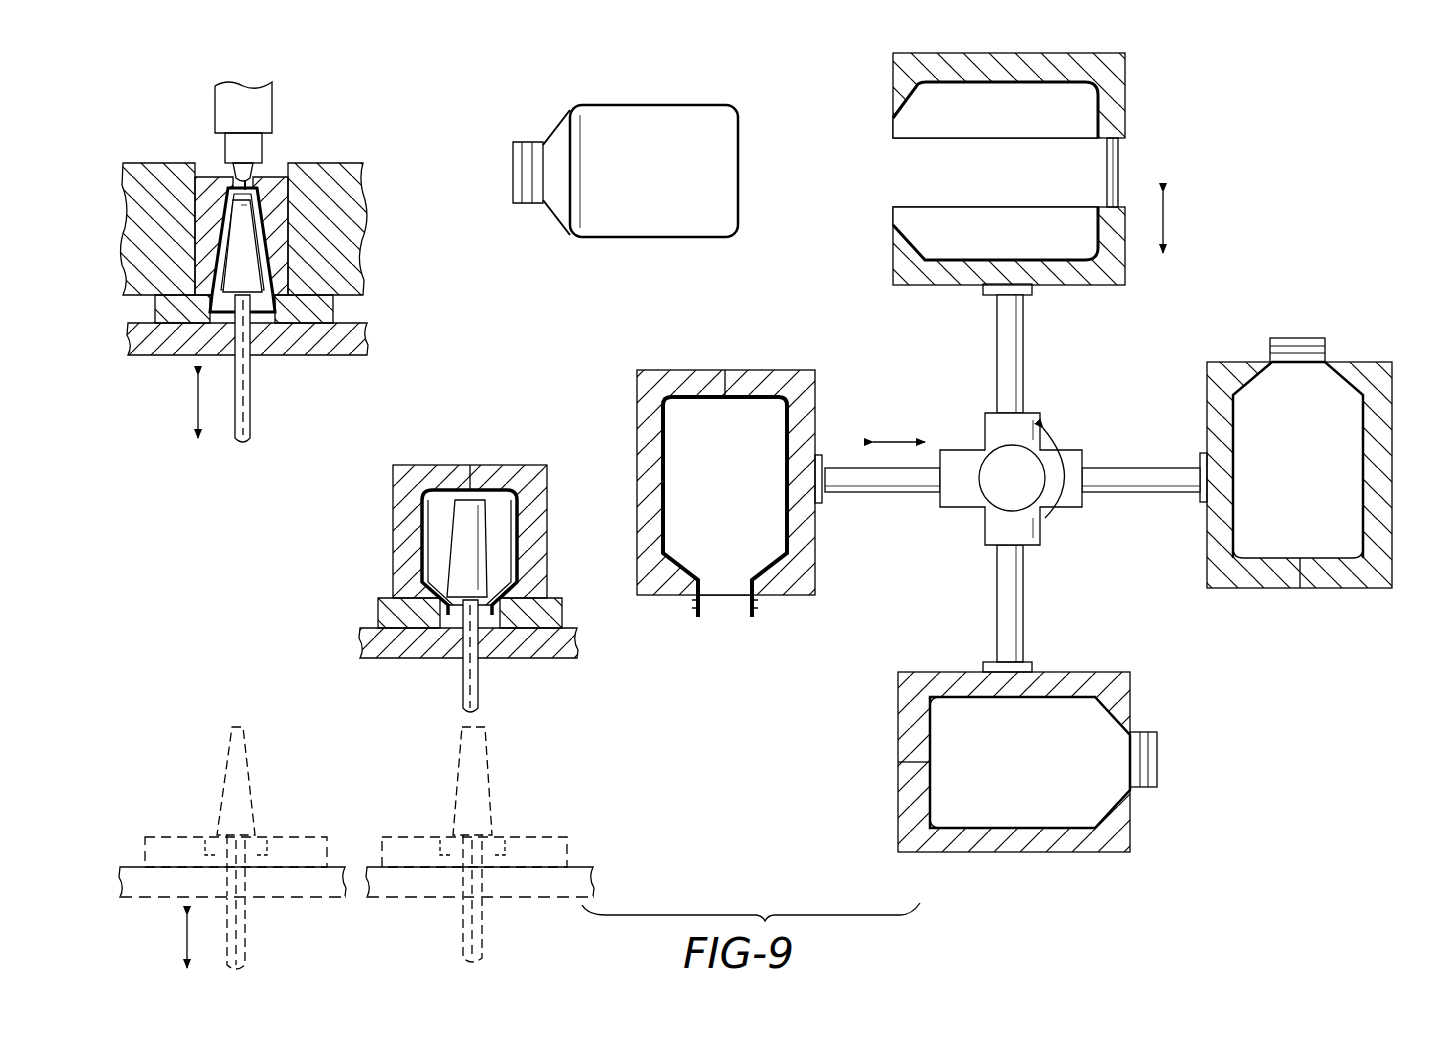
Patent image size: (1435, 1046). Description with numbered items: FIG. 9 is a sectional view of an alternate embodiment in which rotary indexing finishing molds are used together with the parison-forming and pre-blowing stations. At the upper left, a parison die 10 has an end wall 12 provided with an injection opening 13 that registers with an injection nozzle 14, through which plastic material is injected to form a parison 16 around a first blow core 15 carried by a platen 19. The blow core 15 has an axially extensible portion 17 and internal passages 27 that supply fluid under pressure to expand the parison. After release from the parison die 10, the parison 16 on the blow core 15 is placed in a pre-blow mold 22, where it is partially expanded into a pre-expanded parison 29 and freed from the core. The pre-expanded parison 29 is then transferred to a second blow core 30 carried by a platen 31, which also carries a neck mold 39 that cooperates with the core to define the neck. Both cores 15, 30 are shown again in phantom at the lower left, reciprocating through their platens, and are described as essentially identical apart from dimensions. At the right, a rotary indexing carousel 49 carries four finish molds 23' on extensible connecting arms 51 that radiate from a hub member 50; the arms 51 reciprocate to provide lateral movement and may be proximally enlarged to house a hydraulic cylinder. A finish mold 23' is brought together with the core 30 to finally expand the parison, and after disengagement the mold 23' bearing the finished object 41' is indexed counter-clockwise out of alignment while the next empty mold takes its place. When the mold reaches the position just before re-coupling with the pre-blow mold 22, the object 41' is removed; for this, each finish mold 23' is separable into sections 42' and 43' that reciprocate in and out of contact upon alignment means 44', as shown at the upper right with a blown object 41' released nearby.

The parison die 10 is at (190, 266).
The end wall 12 is at (258, 187).
The injection opening 13 is at (250, 182).
The injection nozzle 14 is at (264, 112).
The first blow core 15 is at (222, 358).
The parison 16 is at (268, 252).
The axially extensible portion 17 is at (252, 432).
The platen 19 is at (158, 354).
The pre-blow mold 22 is at (511, 468).
The finish mold 23' is at (1014, 502).
The passages 27 is at (255, 387).
The pre-expanded parison 29 is at (420, 541).
The blow core 30 is at (510, 660).
The platen 31 is at (577, 651).
The neck mold 39 is at (549, 606).
The object 41' is at (938, 447).
The mold section 42' is at (1046, 249).
The mold section 43' is at (1041, 95).
The alignment means 44' is at (1140, 172).
The rotary indexing carousel 49 is at (1078, 398).
The hub member 50 is at (1000, 485).
The connecting arms 51 is at (995, 432).